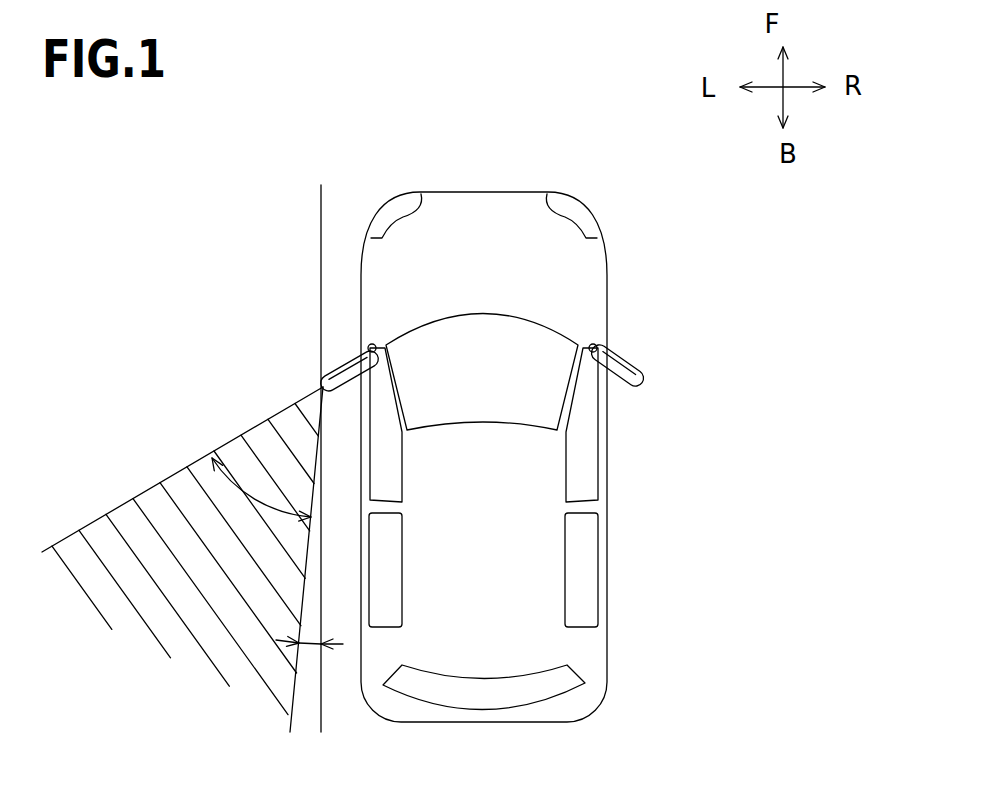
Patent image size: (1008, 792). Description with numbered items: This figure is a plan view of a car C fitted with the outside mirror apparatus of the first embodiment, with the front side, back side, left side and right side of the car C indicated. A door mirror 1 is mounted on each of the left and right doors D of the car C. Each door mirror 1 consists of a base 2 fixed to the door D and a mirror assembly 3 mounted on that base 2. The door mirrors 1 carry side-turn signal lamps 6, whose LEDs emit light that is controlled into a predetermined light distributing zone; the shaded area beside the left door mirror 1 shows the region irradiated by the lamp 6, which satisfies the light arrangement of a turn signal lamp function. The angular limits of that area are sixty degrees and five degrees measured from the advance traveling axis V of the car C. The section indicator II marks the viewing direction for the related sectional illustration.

The door mirror 1 is at (447, 350).
The base 2 is at (373, 345).
The mirror assembly 3 is at (358, 360).
The side-turn signal lamp 6 is at (333, 372).
The car C is at (528, 190).
The door D is at (362, 393).
The advance traveling axis V is at (322, 461).
The section line II is at (478, 140).